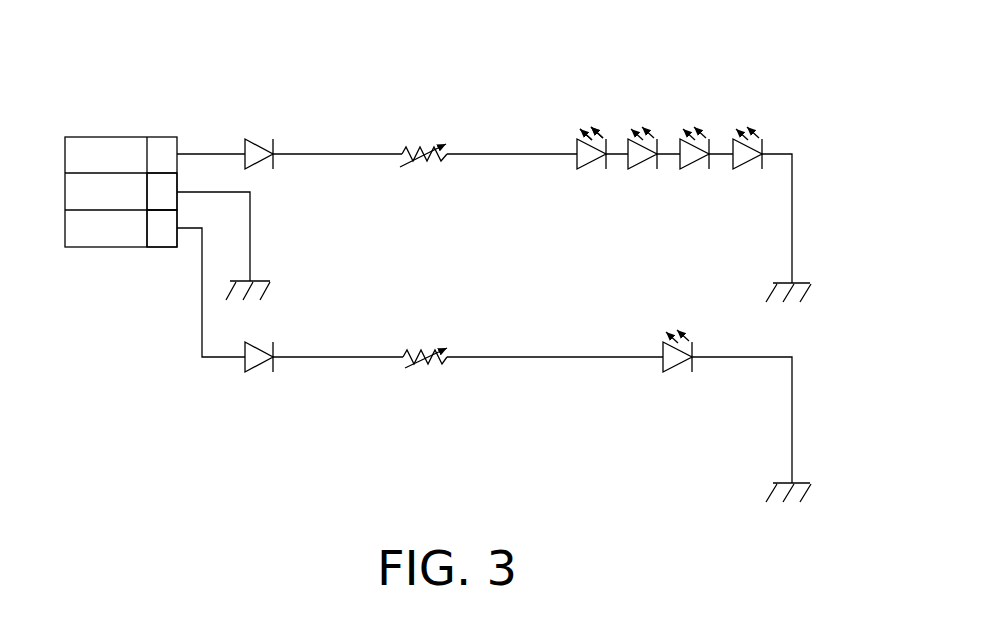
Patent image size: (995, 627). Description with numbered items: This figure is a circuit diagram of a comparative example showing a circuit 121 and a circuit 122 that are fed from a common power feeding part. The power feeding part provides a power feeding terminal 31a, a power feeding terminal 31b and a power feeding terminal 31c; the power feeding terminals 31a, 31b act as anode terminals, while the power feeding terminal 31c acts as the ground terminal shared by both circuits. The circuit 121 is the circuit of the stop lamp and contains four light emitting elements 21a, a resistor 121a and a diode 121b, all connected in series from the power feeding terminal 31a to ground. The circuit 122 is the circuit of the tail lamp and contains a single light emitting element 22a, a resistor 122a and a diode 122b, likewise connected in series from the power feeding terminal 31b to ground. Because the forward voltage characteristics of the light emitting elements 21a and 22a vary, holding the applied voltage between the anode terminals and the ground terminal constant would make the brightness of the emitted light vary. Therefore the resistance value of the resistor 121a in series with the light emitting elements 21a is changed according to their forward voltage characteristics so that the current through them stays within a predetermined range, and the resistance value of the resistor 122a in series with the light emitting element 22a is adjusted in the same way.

The power feeding terminal 31a is at (158, 150).
The power feeding terminal 31b is at (162, 228).
The power feeding terminal 31c is at (165, 187).
The circuit 121 is at (682, 152).
The resistor 121a is at (417, 143).
The diode 121b is at (258, 140).
The light emitting element 21a is at (764, 126).
The circuit 122 is at (670, 424).
The resistor 122a is at (438, 365).
The diode 122b is at (260, 373).
The light emitting element 22a is at (677, 379).